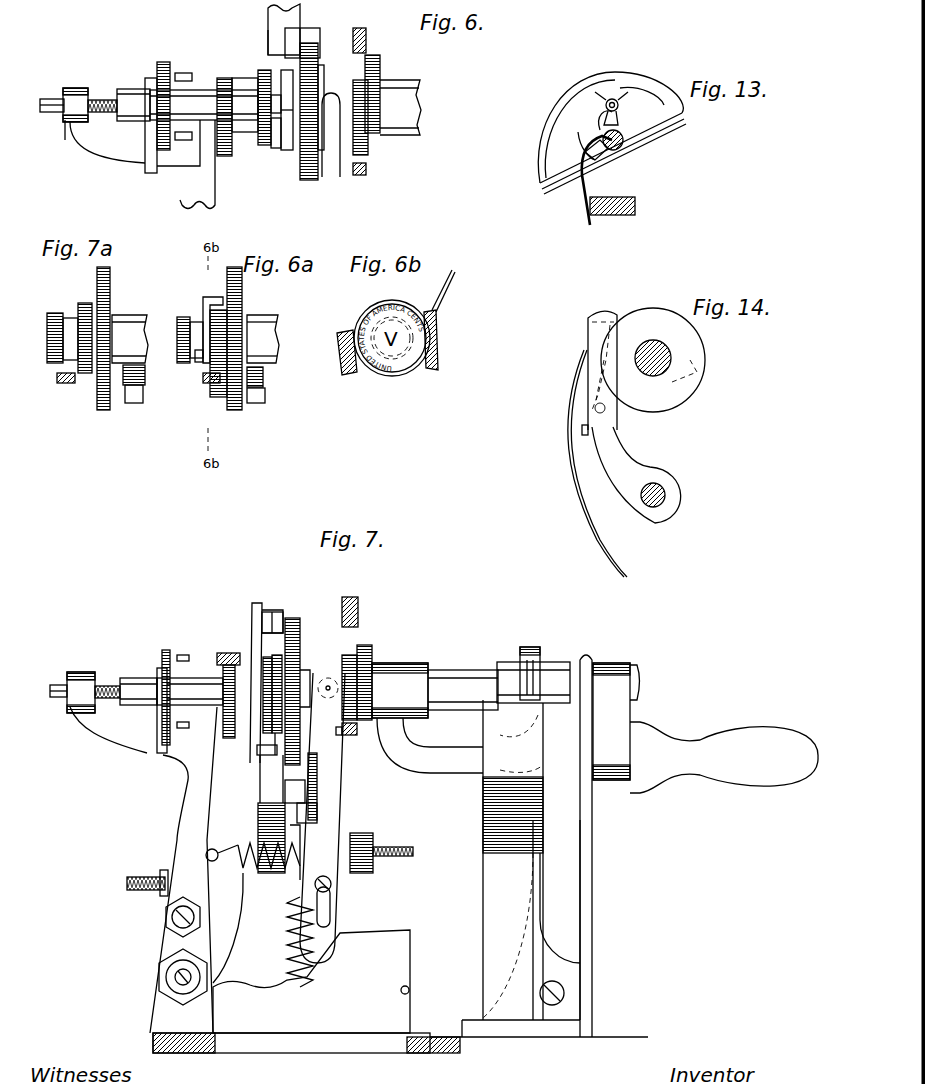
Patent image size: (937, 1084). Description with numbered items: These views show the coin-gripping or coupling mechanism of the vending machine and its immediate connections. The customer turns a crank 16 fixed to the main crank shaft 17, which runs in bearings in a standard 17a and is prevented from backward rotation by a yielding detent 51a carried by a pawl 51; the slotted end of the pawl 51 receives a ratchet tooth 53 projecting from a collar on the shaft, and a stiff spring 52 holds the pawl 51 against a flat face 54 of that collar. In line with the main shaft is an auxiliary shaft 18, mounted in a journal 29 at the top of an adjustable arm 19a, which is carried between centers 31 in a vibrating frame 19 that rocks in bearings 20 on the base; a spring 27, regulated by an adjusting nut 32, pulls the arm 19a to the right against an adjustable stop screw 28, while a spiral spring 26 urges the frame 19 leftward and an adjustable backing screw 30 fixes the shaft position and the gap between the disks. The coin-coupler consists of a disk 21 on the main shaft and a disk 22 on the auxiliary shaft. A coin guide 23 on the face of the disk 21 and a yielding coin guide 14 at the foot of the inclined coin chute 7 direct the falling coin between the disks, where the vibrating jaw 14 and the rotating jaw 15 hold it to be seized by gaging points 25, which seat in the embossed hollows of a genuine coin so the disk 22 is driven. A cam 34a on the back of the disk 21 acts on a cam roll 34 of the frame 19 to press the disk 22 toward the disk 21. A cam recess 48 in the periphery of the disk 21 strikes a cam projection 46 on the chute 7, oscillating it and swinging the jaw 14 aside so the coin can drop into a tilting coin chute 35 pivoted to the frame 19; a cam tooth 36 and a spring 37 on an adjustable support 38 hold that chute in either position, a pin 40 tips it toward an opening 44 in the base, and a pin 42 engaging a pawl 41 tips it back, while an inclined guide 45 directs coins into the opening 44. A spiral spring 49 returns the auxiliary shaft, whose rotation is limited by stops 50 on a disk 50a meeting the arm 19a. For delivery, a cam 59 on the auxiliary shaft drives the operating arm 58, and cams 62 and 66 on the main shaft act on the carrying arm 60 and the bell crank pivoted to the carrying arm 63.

In FIG. 6, the inclined coin chute 7 is at (260, 32).
In FIG. 7a, the vibrating coin holding jaw 14 is at (62, 384).
In FIG. 6a, the vibrating coin holding jaw 14 is at (207, 384).
In FIG. 6b, the vibrating coin holding jaw 14 is at (445, 312).
In FIG. 7, the vibrating coin holding jaw 14 is at (250, 640).
In FIG. 6, the rotating coin holding jaw 15 is at (284, 150).
In FIG. 6a, the rotating coin holding jaw 15 is at (216, 297).
In FIG. 6b, the rotating coin holding jaw 15 is at (345, 366).
In FIG. 7, the rotating coin holding jaw 15 is at (278, 711).
In FIG. 7, the crank 16 is at (660, 750).
In FIG. 14, the main crank shaft 17 is at (672, 382).
In FIG. 7, the main crank shaft 17 is at (450, 680).
In FIG. 6, the standard 17a is at (424, 132).
In FIG. 7, the standard 17a is at (478, 869).
In FIG. 6, the auxiliary shaft 18 is at (133, 105).
In FIG. 7, the auxiliary shaft 18 is at (135, 678).
In FIG. 6, the vibrating frame 19 is at (326, 172).
In FIG. 13, the vibrating frame 19 is at (635, 206).
In FIG. 7a, the vibrating frame 19 is at (133, 403).
In FIG. 6a, the vibrating frame 19 is at (265, 400).
In FIG. 7, the vibrating frame 19 is at (279, 828).
In FIG. 6, the adjustable arm 19a is at (180, 202).
In FIG. 7, the adjustable arm 19a is at (143, 870).
In FIG. 7, the bearings 20 is at (183, 987).
In FIG. 6, the coupling disk 21 is at (307, 182).
In FIG. 7a, the coupling disk 21 is at (110, 272).
In FIG. 7, the coupling disk 21 is at (300, 640).
In FIG. 6, the coupling disk 22 is at (263, 70).
In FIG. 7a, the coupling disk 22 is at (56, 313).
In FIG. 6a, the coupling disk 22 is at (183, 317).
In FIG. 7, the coupling disk 22 is at (268, 733).
In FIG. 6, the coin guide 23 is at (284, 29).
In FIG. 6, the gaging points 25 is at (275, 148).
In FIG. 6a, the gaging points 25 is at (196, 362).
In FIG. 7, the spiral spring 26 is at (290, 965).
In FIG. 7, the spring 27 is at (240, 842).
In FIG. 7, the adjustable stop screw 28 is at (140, 877).
In FIG. 6, the journal 29 is at (204, 105).
In FIG. 7, the journal 29 is at (190, 691).
In FIG. 6, the adjustable backing screw 30 is at (52, 99).
In FIG. 7, the adjustable backing screw 30 is at (55, 685).
In FIG. 7, the centers 31 is at (172, 918).
In FIG. 7, the adjusting nut 32 is at (362, 836).
In FIG. 7a, the cam roll 34 is at (145, 375).
In FIG. 6a, the cam roll 34 is at (263, 375).
In FIG. 7, the cam roll 34 is at (328, 698).
In FIG. 7a, the cam 34a is at (130, 339).
In FIG. 6a, the cam 34a is at (255, 312).
In FIG. 7, the cam 34a is at (308, 676).
In FIG. 13, the tilting coin chute 35 is at (552, 124).
In FIG. 7, the tilting coin chute 35 is at (260, 793).
In FIG. 13, the cam tooth 36 is at (594, 162).
In FIG. 7, the cam tooth 36 is at (305, 812).
In FIG. 13, the spring 37 is at (580, 192).
In FIG. 7, the spring 37 is at (300, 845).
In FIG. 7, the adjustable support 38 is at (331, 908).
In FIG. 7, the pin 40 is at (257, 755).
In FIG. 13, the pawl 41 is at (614, 98).
In FIG. 7, the pawl 41 is at (318, 770).
In FIG. 13, the pin 42 is at (624, 140).
In FIG. 7, the pin 42 is at (305, 792).
In FIG. 7, the opening 44 is at (316, 1053).
In FIG. 7, the inclined guide 45 is at (311, 981).
In FIG. 6, the cam projection 46 is at (308, 28).
In FIG. 7, the cam projection 46 is at (275, 616).
In FIG. 6, the cam recess 48 is at (290, 105).
In FIG. 7a, the cam recess 48 is at (95, 325).
In FIG. 6a, the cam recess 48 is at (232, 400).
In FIG. 6, the spiral spring 49 is at (145, 82).
In FIG. 7, the spiral spring 49 is at (157, 718).
In FIG. 6, the stops 50 is at (183, 73).
In FIG. 7, the stops 50 is at (180, 655).
In FIG. 6, the disk 50a is at (160, 62).
In FIG. 7, the disk 50a is at (164, 650).
In FIG. 14, the pawl 51 is at (612, 433).
In FIG. 7, the pawl 51 is at (540, 662).
In FIG. 14, the yielding detent 51a is at (606, 404).
In FIG. 14, the stiff spring 52 is at (572, 418).
In FIG. 7, the stiff spring 52 is at (513, 860).
In FIG. 14, the ratchet tooth 53 is at (607, 342).
In FIG. 7, the ratchet tooth 53 is at (530, 650).
In FIG. 14, the flat face 54 is at (620, 330).
In FIG. 7, the operating arm 58 is at (220, 655).
In FIG. 6, the cam 59 is at (228, 156).
In FIG. 6, the carrying arm 60 is at (366, 175).
In FIG. 7, the carrying arm 60 is at (355, 738).
In FIG. 6, the cam 62 is at (368, 150).
In FIG. 7, the cam 62 is at (357, 722).
In FIG. 6, the carrying arm 63 is at (366, 35).
In FIG. 7, the carrying arm 63 is at (358, 610).
In FIG. 6, the cam 66 is at (380, 60).
In FIG. 7, the cam 66 is at (372, 652).